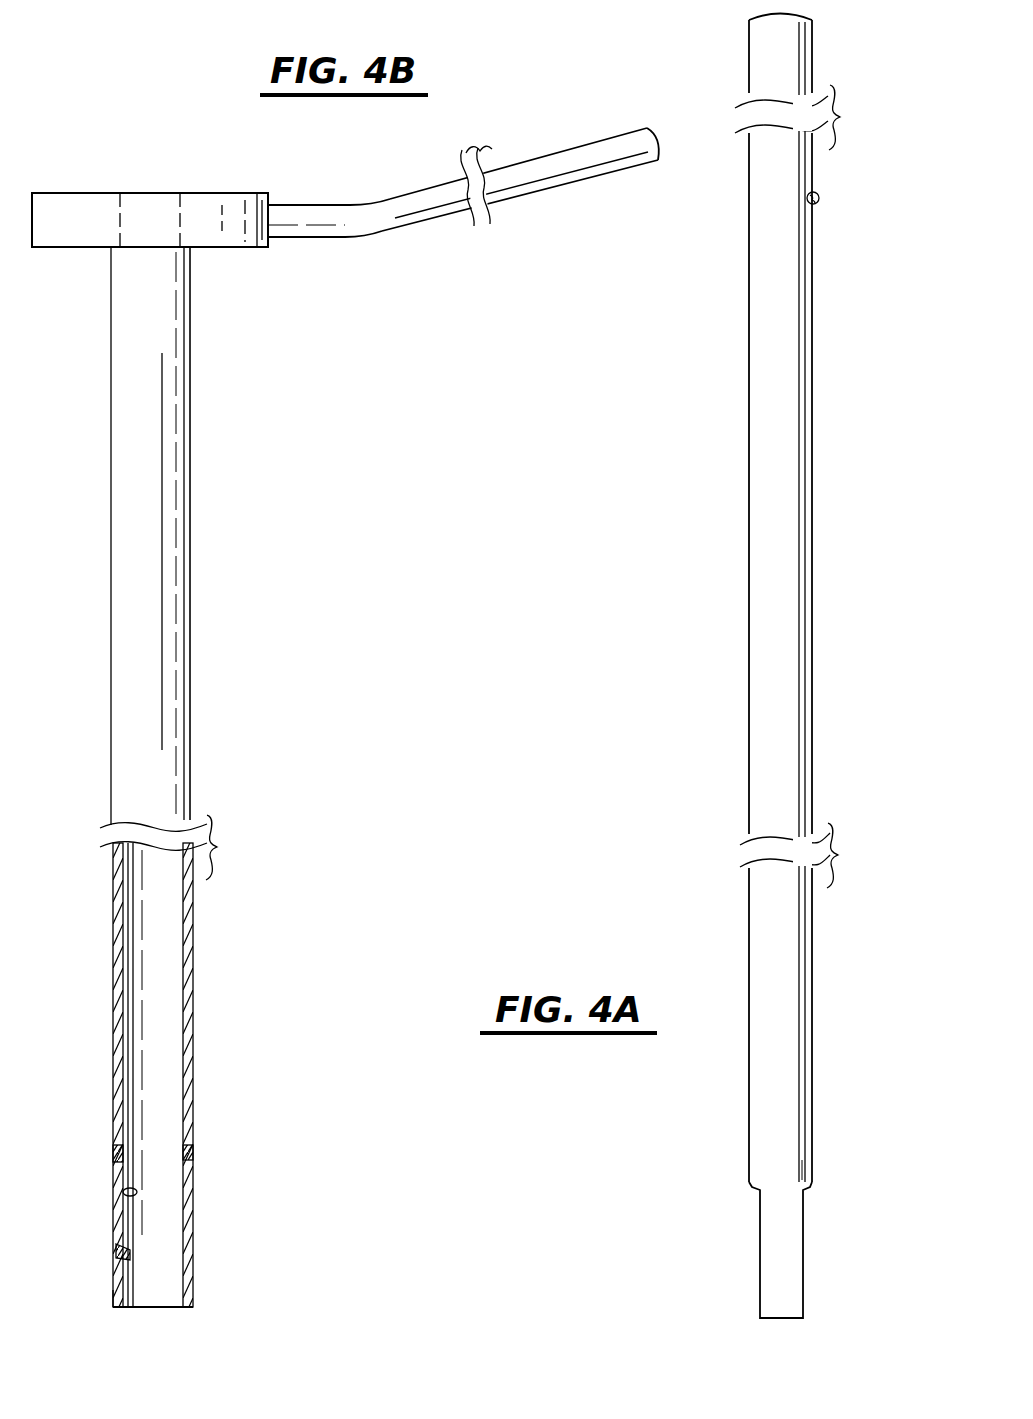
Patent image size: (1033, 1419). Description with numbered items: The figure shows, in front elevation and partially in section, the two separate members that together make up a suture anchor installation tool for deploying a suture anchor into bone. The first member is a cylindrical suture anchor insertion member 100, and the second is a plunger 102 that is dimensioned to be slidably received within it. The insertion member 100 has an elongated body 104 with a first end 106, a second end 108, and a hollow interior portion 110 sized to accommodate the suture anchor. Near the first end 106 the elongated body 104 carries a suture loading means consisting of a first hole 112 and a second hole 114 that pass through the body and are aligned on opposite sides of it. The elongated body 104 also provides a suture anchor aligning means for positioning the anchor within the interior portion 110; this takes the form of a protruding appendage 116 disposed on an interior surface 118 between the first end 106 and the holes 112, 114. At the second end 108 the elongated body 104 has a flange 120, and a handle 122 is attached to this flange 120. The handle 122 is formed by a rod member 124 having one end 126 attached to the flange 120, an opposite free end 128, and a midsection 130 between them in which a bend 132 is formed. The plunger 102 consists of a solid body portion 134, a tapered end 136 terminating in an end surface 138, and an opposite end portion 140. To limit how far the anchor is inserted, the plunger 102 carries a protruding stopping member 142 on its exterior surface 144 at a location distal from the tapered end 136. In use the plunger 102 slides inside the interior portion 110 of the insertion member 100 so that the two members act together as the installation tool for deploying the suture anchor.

In FIG. 4B, the suture anchor insertion member 100 is at (360, 576).
In FIG. 4A, the plunger 102 is at (695, 523).
In FIG. 4B, the elongated body 104 is at (172, 513).
In FIG. 4B, the first end 106 is at (160, 1298).
In FIG. 4B, the second end 108 is at (157, 213).
In FIG. 4B, the hollow interior portion 110 is at (165, 950).
In FIG. 4B, the first hole 112 is at (117, 1152).
In FIG. 4B, the second hole 114 is at (193, 1156).
In FIG. 4B, the protruding appendage 116 is at (118, 1247).
In FIG. 4B, the interior surface 118 is at (126, 1192).
In FIG. 4B, the flange 120 is at (75, 200).
In FIG. 4B, the handle 122 is at (430, 192).
In FIG. 4B, the rod member 124 is at (543, 162).
In FIG. 4B, the end of rod member 126 is at (276, 223).
In FIG. 4B, the end of rod member 128 is at (642, 137).
In FIG. 4B, the midsection 130 is at (402, 214).
In FIG. 4B, the bend 132 is at (365, 222).
In FIG. 4A, the solid body portion 134 is at (795, 425).
In FIG. 4A, the tapered end 136 is at (783, 1255).
In FIG. 4A, the end surface 138 is at (785, 1318).
In FIG. 4A, the opposite end portion 140 is at (800, 33).
In FIG. 4A, the protruding stopping member 142 is at (816, 198).
In FIG. 4A, the exterior surface 144 is at (762, 236).